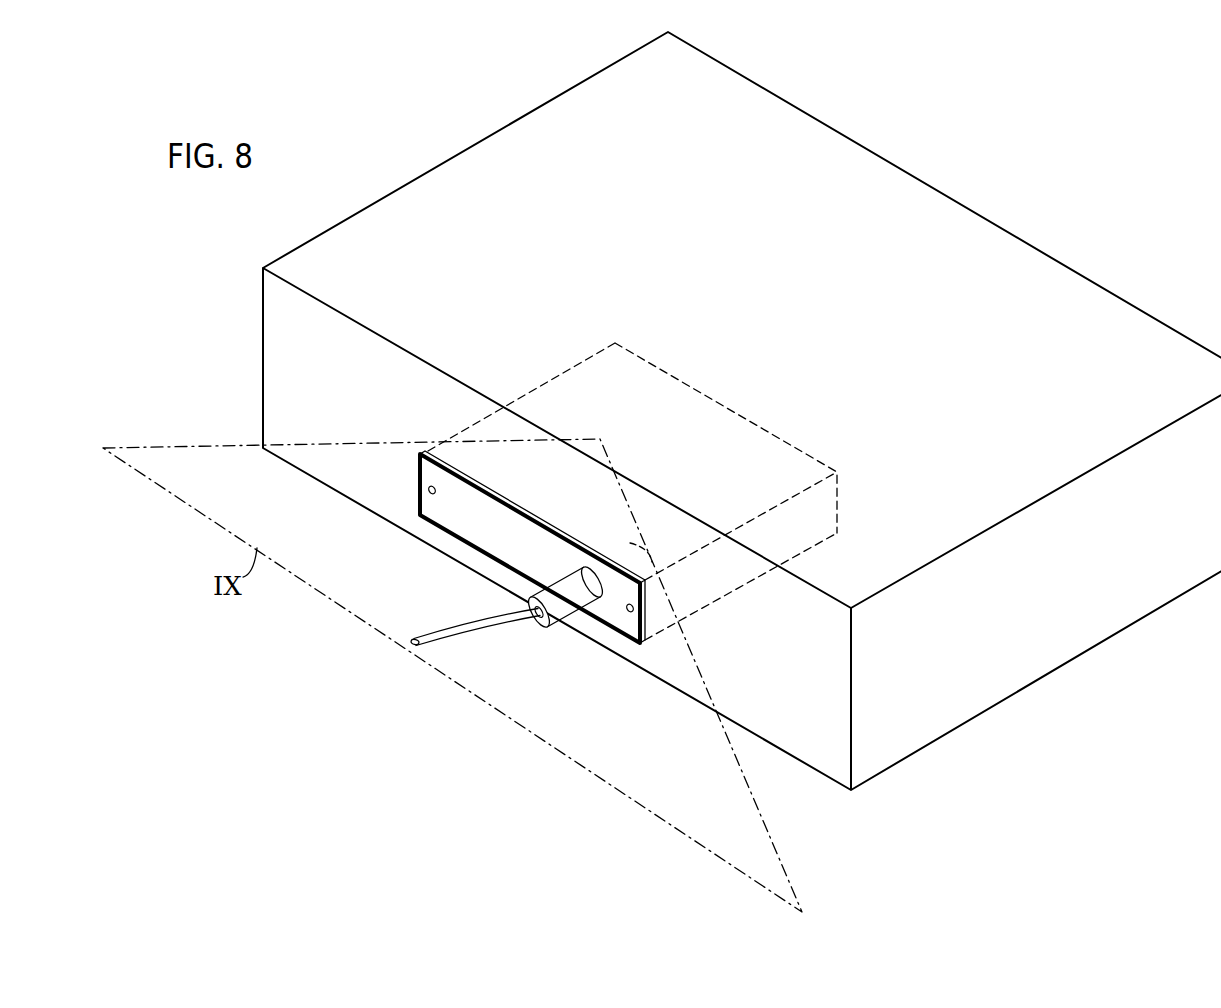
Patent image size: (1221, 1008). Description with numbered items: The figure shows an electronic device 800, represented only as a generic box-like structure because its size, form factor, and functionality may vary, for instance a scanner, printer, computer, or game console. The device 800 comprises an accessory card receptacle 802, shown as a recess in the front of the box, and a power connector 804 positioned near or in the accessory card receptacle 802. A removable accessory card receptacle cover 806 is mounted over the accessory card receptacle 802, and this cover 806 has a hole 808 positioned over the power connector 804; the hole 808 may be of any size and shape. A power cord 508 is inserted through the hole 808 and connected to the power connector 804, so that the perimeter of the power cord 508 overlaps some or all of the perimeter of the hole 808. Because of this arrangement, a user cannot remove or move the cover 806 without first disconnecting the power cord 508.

The device 800 is at (192, 320).
The accessory card receptacle 802 is at (747, 422).
The power connector 804 is at (612, 553).
The removable accessory card receptacle cover 806 is at (470, 513).
The hole 808 is at (600, 597).
The power cord 508 is at (507, 637).